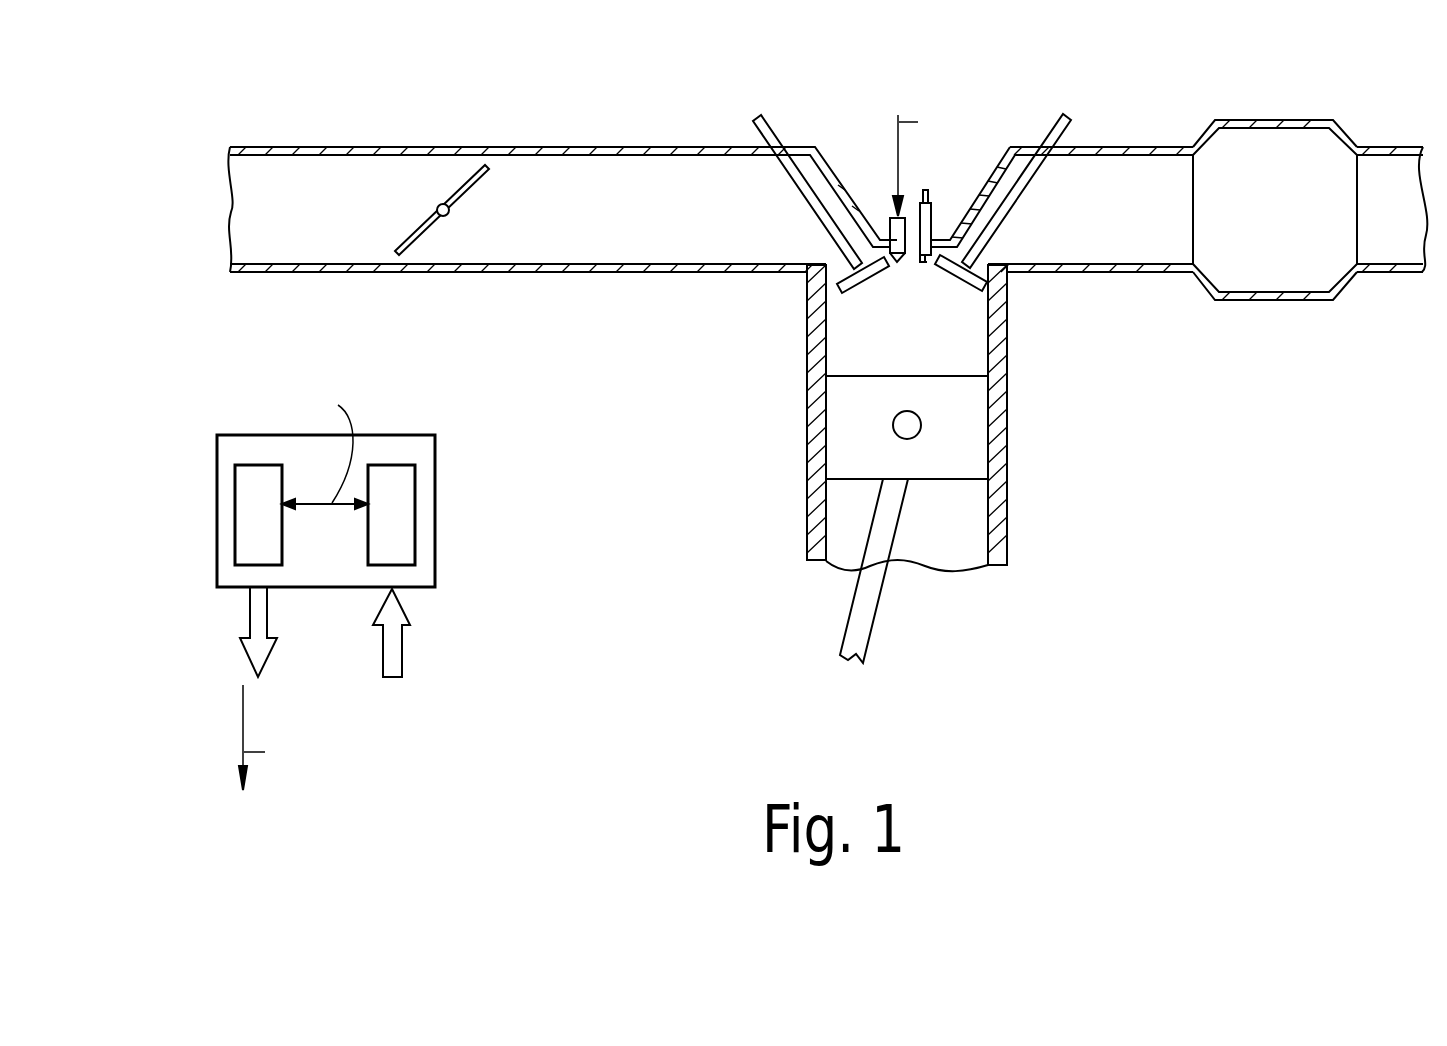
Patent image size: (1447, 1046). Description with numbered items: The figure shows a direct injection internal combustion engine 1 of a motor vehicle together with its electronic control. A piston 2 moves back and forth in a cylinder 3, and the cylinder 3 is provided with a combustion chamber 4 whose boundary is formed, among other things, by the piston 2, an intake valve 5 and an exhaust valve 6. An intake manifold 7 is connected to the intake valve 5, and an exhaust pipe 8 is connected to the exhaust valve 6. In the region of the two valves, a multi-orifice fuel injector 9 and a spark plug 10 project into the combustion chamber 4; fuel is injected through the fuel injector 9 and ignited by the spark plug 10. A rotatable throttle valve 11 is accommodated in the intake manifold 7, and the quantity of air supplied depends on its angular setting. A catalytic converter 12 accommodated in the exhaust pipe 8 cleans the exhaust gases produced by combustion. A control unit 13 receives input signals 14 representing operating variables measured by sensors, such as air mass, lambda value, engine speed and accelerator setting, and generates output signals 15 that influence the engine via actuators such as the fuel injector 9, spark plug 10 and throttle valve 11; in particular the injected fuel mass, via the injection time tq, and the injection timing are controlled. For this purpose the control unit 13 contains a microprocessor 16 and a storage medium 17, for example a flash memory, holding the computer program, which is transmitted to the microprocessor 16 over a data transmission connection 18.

The internal combustion engine 1 is at (588, 417).
The piston 2 is at (972, 445).
The cylinder 3 is at (992, 353).
The combustion chamber 4 is at (852, 331).
The intake valve 5 is at (768, 123).
The exhaust valve 6 is at (1052, 136).
The intake manifold 7 is at (508, 256).
The exhaust pipe 8 is at (1157, 250).
The fuel injector 9 is at (891, 235).
The spark plug 10 is at (928, 232).
The throttle valve 11 is at (428, 221).
The catalytic converter 12 is at (1275, 138).
The control unit 13 is at (425, 460).
The input signals 14 is at (393, 648).
The output signals 15 is at (250, 612).
The microprocessor 16 is at (403, 551).
The storage medium 17 is at (247, 483).
The data transmission connection 18 is at (318, 507).